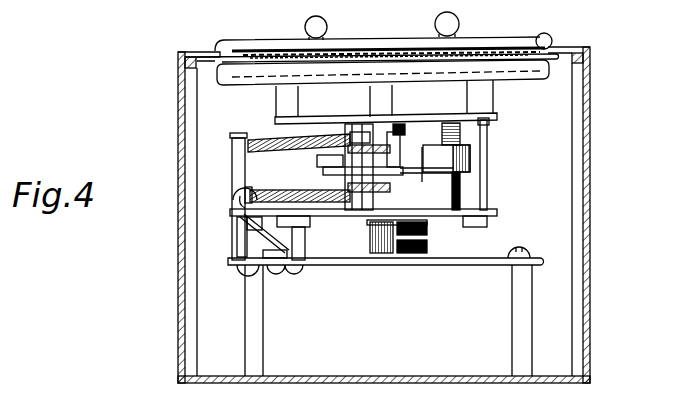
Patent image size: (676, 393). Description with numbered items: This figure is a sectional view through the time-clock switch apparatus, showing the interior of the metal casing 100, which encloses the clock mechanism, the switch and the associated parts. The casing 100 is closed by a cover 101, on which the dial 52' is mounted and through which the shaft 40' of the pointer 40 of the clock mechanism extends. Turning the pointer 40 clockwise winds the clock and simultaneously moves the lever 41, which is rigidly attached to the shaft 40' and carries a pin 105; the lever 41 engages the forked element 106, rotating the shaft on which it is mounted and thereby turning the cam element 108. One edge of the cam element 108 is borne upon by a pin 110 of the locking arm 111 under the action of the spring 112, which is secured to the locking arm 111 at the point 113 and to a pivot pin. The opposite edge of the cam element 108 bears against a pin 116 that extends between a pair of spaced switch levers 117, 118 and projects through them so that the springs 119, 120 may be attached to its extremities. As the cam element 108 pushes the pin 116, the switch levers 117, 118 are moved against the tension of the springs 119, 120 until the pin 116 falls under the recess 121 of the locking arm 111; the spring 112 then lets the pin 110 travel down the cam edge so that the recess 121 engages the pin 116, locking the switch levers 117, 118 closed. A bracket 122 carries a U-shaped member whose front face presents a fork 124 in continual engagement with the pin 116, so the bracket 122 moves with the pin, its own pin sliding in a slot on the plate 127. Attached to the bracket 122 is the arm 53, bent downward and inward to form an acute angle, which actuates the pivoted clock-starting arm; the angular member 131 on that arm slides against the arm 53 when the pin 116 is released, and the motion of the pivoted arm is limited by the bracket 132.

The casing 100 is at (591, 113).
The cover 101 is at (178, 68).
The pointer 40 is at (378, 51).
The shaft 40' is at (390, 80).
The dial 52' is at (391, 30).
The arm 53 is at (230, 210).
The lever 41 is at (426, 230).
The pin 105 is at (413, 260).
The forked element 106 is at (412, 238).
The cam element 108 is at (317, 160).
The pin 110 is at (322, 138).
The locking arm 111 is at (329, 174).
The spring 112 is at (465, 135).
The attachment point 113 is at (433, 162).
The pin 116 is at (397, 160).
The switch lever 117 is at (398, 125).
The switch lever 118 is at (382, 190).
The spring 119 is at (260, 138).
The spring 120 is at (283, 189).
The recess 121 is at (450, 178).
The bracket 122 is at (440, 207).
The fork 124 is at (331, 210).
The plate 127 is at (497, 213).
The angular member 131 is at (258, 262).
The bracket 132 is at (258, 226).